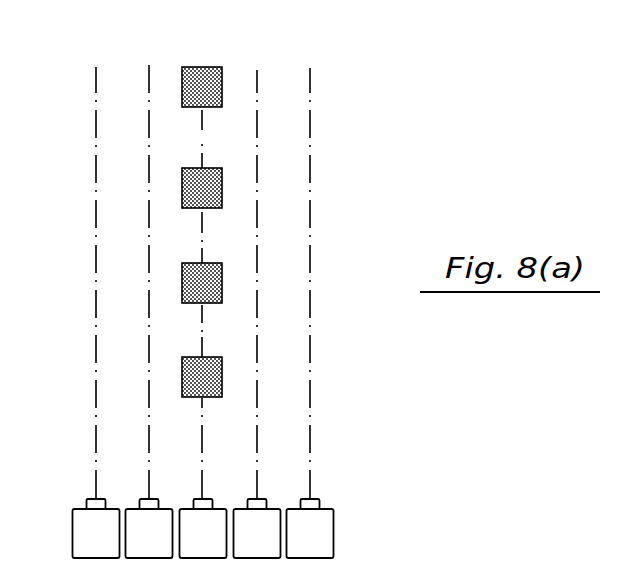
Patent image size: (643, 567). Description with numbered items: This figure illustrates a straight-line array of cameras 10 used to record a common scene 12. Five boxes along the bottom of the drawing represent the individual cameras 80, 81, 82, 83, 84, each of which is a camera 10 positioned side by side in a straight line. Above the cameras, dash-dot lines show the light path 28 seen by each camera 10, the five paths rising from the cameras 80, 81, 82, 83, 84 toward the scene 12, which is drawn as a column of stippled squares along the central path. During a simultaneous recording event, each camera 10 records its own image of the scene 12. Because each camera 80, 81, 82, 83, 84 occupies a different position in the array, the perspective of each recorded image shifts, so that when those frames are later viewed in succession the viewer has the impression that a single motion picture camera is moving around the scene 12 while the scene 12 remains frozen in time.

The camera 10 is at (248, 527).
The scene 12 is at (197, 68).
The light path 28 is at (202, 127).
The camera 80 is at (113, 546).
The camera 81 is at (166, 546).
The camera 82 is at (220, 546).
The camera 83 is at (274, 546).
The camera 84 is at (327, 546).